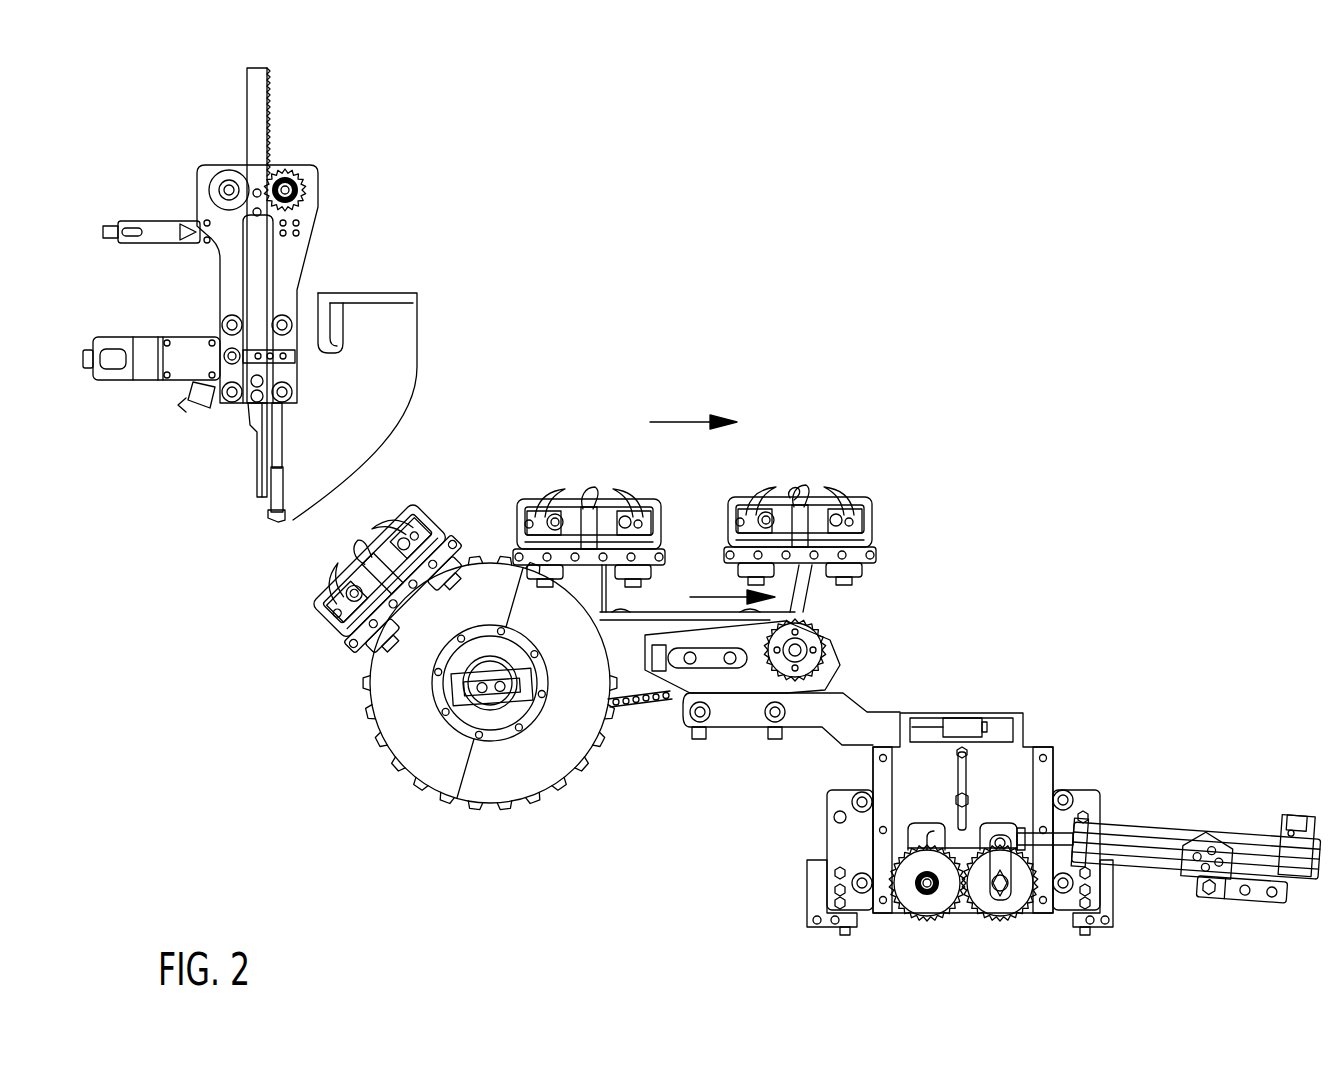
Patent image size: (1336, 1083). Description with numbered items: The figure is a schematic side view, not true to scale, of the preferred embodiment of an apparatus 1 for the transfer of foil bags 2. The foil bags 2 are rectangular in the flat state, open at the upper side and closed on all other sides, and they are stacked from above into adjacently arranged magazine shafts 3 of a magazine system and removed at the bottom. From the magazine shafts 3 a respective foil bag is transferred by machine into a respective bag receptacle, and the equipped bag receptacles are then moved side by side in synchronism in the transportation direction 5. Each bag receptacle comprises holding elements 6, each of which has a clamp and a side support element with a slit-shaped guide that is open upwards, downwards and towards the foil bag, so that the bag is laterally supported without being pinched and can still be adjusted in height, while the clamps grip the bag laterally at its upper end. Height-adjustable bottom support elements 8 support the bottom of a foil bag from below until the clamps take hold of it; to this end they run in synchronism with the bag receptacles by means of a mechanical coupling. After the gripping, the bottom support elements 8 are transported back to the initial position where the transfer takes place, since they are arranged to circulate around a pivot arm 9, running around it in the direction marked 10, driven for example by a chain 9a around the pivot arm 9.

The apparatus 1 is at (450, 466).
The foil bags 2 is at (592, 497).
The magazine shafts 3 is at (372, 316).
The transportation direction 5 is at (693, 411).
The holding elements 6 is at (788, 500).
The bottom support elements 8 is at (605, 590).
The pivot arm 9 is at (753, 627).
The chain 9a is at (643, 713).
The direction of circulation 10 is at (732, 583).